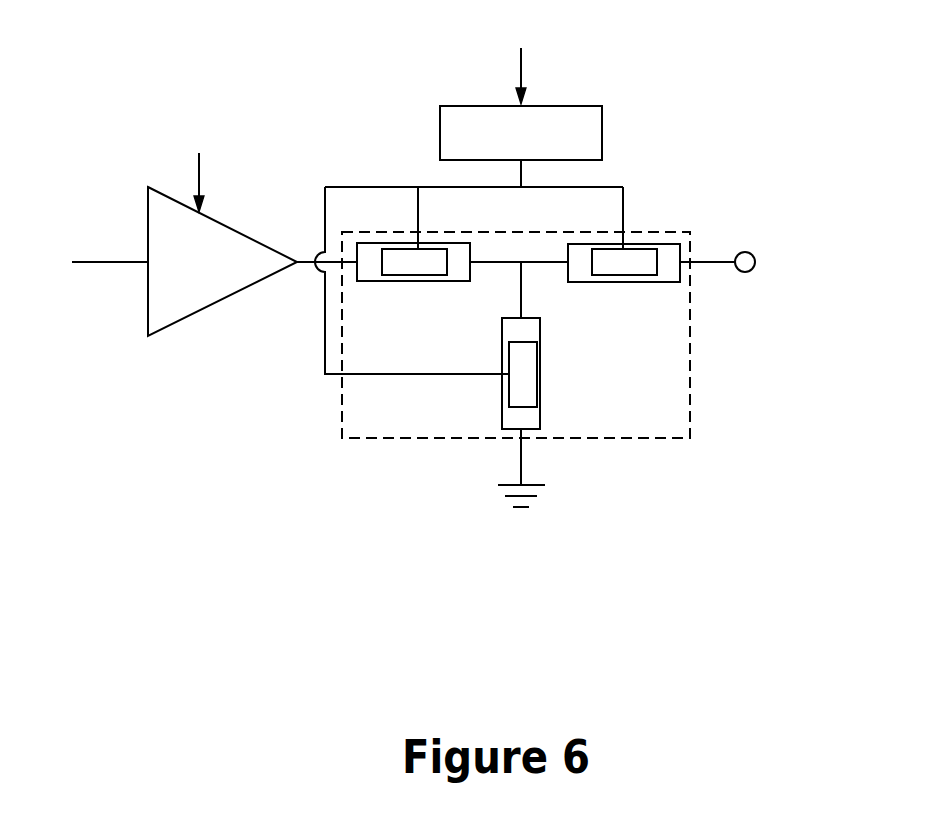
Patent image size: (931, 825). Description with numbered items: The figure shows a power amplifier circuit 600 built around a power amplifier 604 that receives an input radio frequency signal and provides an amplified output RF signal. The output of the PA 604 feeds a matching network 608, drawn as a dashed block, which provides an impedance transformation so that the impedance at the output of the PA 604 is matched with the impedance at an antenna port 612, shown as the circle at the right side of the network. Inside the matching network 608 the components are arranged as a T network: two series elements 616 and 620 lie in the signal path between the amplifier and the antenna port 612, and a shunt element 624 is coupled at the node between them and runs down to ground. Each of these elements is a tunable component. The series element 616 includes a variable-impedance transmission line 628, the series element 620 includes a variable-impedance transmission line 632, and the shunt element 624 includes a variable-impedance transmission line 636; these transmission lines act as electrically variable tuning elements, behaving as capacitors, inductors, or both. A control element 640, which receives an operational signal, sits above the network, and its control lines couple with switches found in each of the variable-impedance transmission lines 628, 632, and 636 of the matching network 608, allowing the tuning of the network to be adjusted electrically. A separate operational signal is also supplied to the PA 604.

The power amplifier circuit 600 is at (122, 68).
The power amplifier 604 is at (217, 222).
The matching network 608 is at (692, 371).
The antenna port 612 is at (752, 254).
The series element 616 is at (410, 243).
The series element 620 is at (626, 244).
The shunt element 624 is at (529, 368).
The variable-impedance transmission line 628 is at (413, 262).
The variable-impedance transmission line 632 is at (624, 263).
The variable-impedance transmission line 636 is at (515, 340).
The control element 640 is at (521, 133).